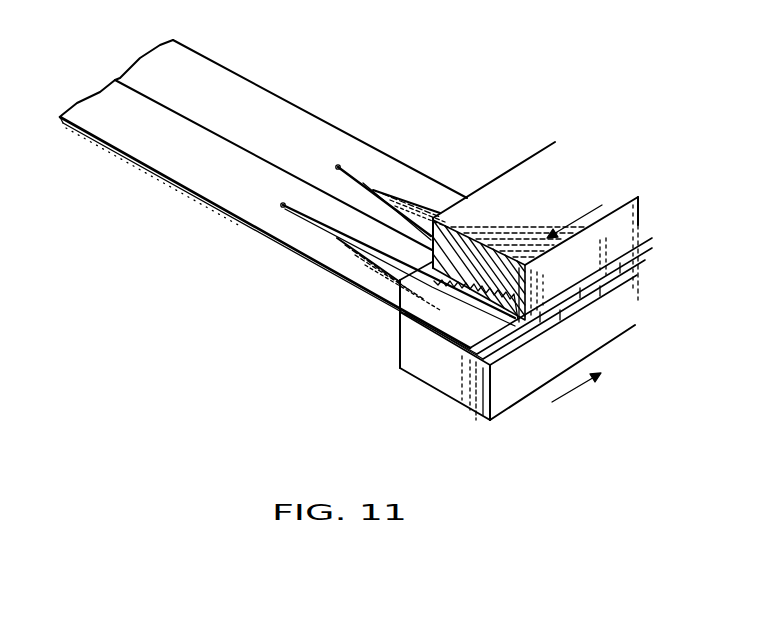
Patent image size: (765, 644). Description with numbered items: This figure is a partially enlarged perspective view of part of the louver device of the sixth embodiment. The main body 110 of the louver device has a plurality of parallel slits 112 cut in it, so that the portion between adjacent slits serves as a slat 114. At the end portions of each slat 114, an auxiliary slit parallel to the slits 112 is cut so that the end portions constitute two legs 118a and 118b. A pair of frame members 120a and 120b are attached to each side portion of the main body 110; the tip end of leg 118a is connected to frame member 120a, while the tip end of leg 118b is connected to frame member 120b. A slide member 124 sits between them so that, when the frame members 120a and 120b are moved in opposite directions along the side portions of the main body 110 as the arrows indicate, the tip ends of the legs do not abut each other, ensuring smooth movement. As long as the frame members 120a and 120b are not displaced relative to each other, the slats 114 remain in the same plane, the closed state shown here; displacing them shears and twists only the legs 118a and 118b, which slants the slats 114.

The main body 110 is at (173, 201).
The slits 112 is at (212, 128).
The slat 114 is at (257, 185).
The leg 118a is at (403, 187).
The leg 118b is at (347, 193).
The frame member 120a is at (530, 160).
The frame member 120b is at (467, 405).
The slide member 124 is at (435, 338).